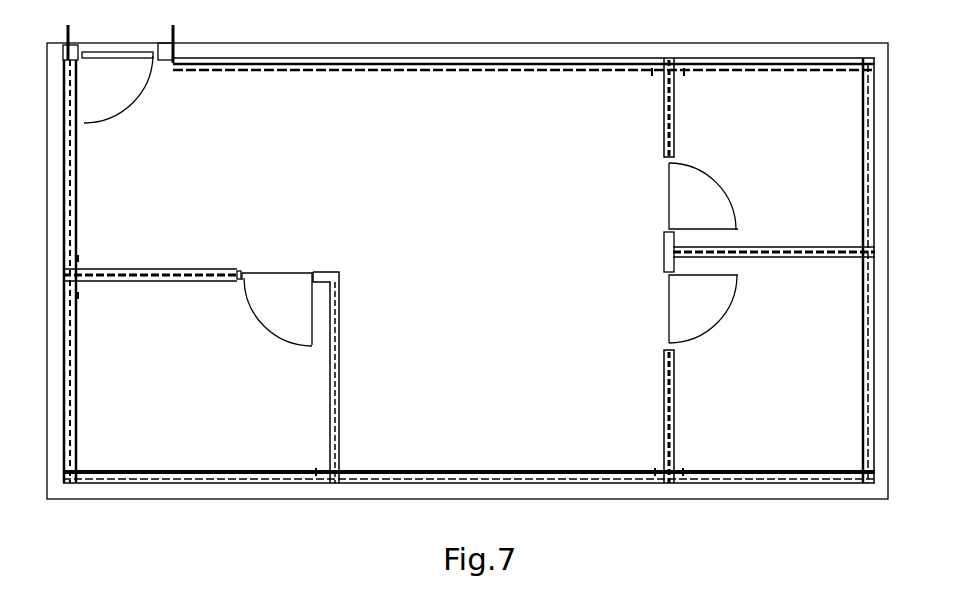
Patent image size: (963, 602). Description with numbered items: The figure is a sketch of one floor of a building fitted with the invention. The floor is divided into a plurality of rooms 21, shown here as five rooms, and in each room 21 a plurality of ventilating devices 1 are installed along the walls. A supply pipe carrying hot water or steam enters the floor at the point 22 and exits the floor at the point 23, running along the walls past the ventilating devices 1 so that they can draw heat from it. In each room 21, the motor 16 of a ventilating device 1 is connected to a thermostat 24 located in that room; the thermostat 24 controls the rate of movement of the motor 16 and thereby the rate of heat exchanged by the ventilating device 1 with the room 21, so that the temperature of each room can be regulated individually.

The ventilating device 1 is at (408, 80).
The motor 16 is at (652, 74).
The room 21 is at (768, 187).
The supply pipe entry 22 is at (70, 31).
The supply pipe exit 23 is at (175, 31).
The thermostat 24 is at (675, 152).